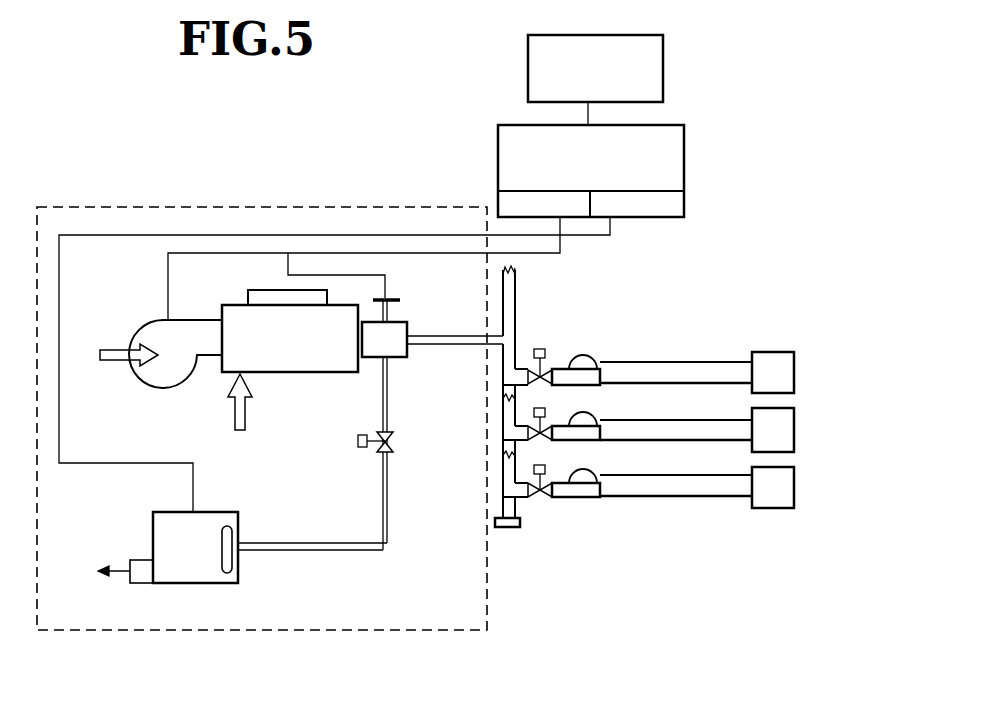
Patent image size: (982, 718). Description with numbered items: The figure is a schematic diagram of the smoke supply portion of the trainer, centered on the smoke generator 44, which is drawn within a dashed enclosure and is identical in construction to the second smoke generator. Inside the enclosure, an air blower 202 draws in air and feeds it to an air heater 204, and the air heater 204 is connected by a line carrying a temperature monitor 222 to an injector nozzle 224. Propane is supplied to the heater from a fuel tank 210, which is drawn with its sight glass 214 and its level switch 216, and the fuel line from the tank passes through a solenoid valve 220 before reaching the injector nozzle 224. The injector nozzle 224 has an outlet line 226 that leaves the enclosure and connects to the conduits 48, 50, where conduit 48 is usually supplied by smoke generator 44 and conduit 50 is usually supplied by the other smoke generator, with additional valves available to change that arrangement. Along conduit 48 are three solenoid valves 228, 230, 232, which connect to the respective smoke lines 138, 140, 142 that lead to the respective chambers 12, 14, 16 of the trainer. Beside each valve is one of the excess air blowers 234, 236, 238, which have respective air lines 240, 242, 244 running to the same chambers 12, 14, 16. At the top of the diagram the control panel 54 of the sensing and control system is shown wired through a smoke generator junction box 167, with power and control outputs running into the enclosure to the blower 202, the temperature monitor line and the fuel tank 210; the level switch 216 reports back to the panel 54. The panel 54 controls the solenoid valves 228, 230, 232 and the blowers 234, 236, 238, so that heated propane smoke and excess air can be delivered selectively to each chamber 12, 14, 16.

The control panel 54 is at (637, 36).
The smoke generator junction box 167 is at (590, 111).
The smoke generator 44 is at (280, 203).
The air blower 202 is at (152, 388).
The air heater 204 is at (280, 365).
The temperature monitor 222 is at (400, 298).
The injector nozzle 224 is at (397, 362).
The outlet line 226 is at (470, 305).
The solenoid valve 220 is at (372, 445).
The fuel tank 210 is at (195, 575).
The sight glass 214 is at (232, 565).
The level switch 216 is at (145, 590).
The conduit 50 is at (516, 290).
The conduit 48 is at (516, 522).
The solenoid valve 228 is at (590, 320).
The solenoid valve 230 is at (565, 398).
The solenoid valve 232 is at (565, 455).
The excess air blower 234 is at (592, 357).
The excess air blower 236 is at (585, 400).
The excess air blower 238 is at (583, 457).
The air line 240 is at (680, 358).
The air line 242 is at (718, 400).
The air line 244 is at (665, 473).
The smoke line 138 is at (672, 378).
The smoke line 140 is at (690, 427).
The smoke line 142 is at (660, 500).
The chamber 12 is at (798, 362).
The chamber 14 is at (798, 420).
The chamber 16 is at (798, 487).